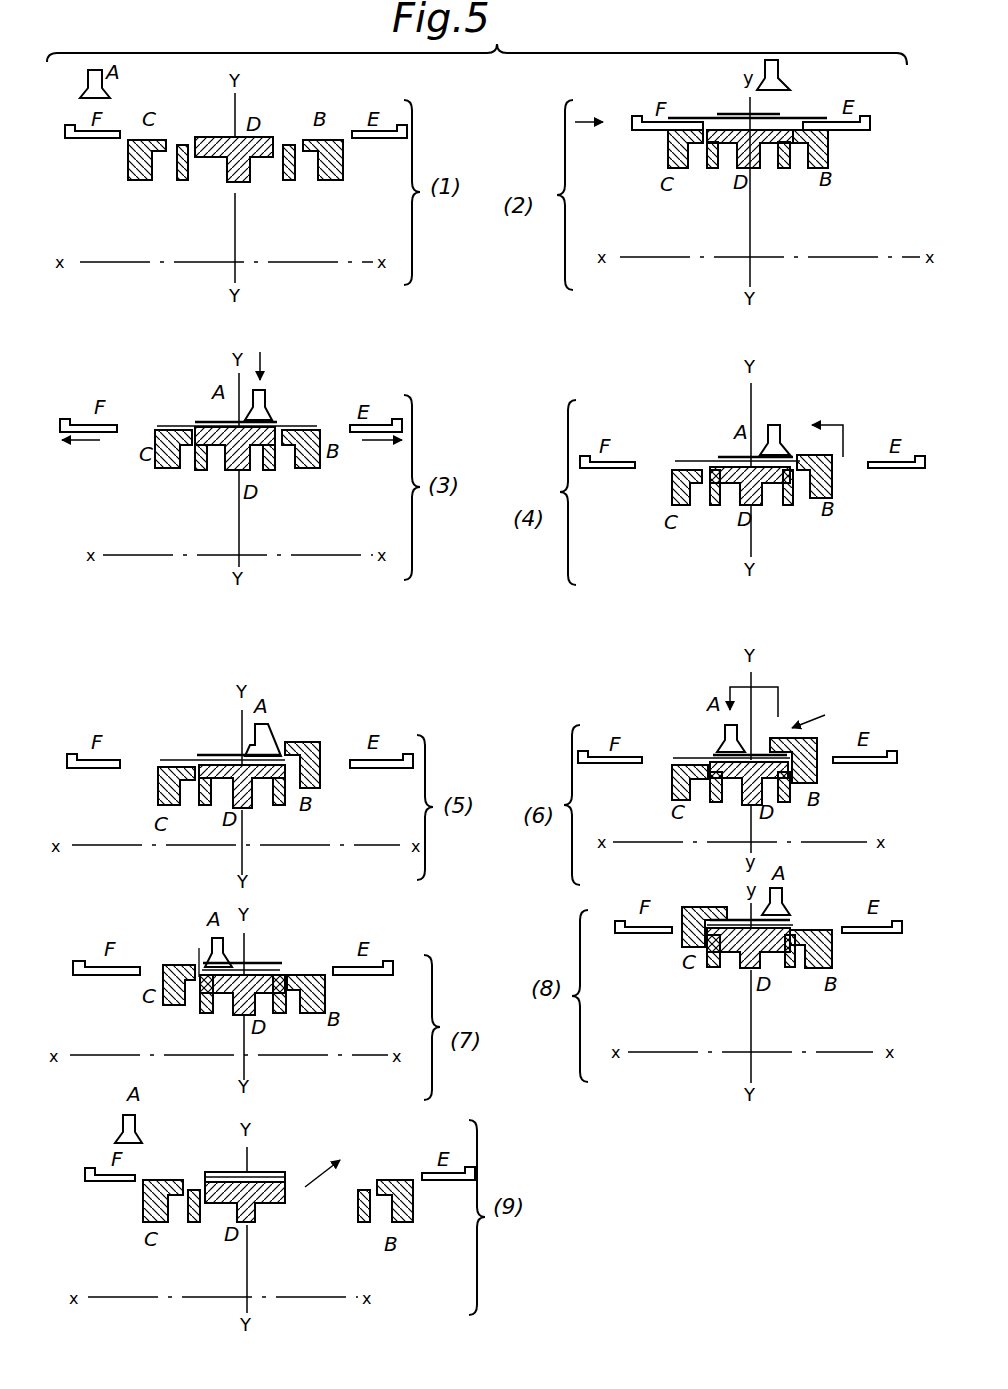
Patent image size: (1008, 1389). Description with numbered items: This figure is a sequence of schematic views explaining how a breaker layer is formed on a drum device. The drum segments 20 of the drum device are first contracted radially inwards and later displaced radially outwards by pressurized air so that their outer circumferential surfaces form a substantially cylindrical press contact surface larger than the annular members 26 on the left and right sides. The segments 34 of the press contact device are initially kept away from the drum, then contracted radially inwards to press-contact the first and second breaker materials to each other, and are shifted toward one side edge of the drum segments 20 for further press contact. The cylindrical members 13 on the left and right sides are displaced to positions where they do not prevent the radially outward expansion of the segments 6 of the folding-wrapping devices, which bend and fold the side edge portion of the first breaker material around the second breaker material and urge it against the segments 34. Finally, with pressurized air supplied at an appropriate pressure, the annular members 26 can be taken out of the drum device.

The segment 6 is at (133, 182).
The cylindrical member 13 is at (100, 140).
The drum segment 20 is at (245, 184).
The annular member 26 is at (183, 182).
The segment 34 is at (80, 92).